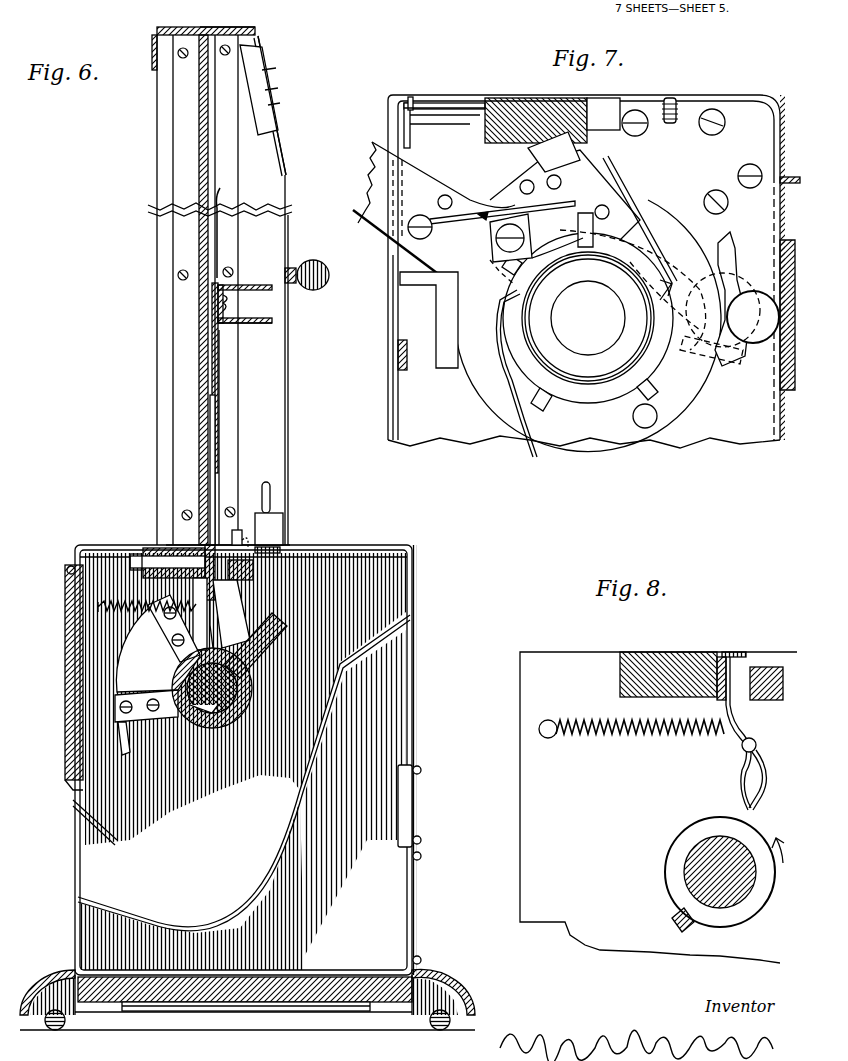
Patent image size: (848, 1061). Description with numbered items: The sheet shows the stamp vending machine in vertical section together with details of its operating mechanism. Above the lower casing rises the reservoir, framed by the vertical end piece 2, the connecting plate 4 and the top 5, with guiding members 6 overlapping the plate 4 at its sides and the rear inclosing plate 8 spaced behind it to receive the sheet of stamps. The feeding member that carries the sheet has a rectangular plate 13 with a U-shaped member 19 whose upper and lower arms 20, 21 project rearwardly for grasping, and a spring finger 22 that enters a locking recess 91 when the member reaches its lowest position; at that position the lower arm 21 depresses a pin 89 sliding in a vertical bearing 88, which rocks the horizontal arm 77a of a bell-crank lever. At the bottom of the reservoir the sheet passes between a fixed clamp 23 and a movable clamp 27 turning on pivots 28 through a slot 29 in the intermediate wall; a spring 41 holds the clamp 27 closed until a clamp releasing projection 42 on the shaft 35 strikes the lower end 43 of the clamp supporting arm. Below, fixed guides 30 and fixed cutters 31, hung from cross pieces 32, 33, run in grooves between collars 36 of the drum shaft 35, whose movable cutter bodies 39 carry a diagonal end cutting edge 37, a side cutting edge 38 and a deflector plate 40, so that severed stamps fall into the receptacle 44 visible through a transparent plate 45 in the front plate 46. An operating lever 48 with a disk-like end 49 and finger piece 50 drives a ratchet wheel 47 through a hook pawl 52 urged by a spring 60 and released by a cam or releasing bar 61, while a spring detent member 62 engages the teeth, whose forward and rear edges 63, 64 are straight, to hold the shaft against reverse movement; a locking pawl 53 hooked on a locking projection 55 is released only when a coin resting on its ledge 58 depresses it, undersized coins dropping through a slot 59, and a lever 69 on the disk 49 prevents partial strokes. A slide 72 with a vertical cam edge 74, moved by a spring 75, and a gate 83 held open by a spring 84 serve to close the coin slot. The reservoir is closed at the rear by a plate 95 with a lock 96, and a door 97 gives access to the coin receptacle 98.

In FIG. 6, the vertical end piece 2 is at (211, 210).
In FIG. 6, the connecting plate 4 is at (205, 160).
In FIG. 6, the top 5 is at (258, 30).
In FIG. 6, the guiding members 6 is at (173, 160).
In FIG. 6, the rear inclosing plate 8 is at (220, 475).
In FIG. 6, the plate 13 is at (218, 355).
In FIG. 6, the U-shaped member 19 is at (228, 302).
In FIG. 6, the upper arm 20 is at (288, 275).
In FIG. 6, the lower arm 21 is at (245, 333).
In FIG. 6, the spring finger 22 is at (218, 240).
In FIG. 6, the fixed clamp 23 is at (205, 545).
In FIG. 8, the fixed clamp 23 is at (722, 654).
In FIG. 6, the movable clamp 27 is at (237, 533).
In FIG. 8, the movable clamp 27 is at (738, 652).
In FIG. 8, the pivots 28 is at (757, 745).
In FIG. 7, the slot 29 is at (612, 130).
In FIG. 6, the fixed guides 30 is at (235, 605).
In FIG. 6, the fixed cutters 31 is at (165, 618).
In FIG. 6, the rear cross piece 32 is at (253, 572).
In FIG. 8, the rear cross piece 32 is at (768, 667).
In FIG. 6, the forward cross piece 33 is at (150, 548).
In FIG. 7, the forward cross piece 33 is at (530, 115).
In FIG. 8, the forward cross piece 33 is at (650, 660).
In FIG. 6, the drum shaft 35 is at (236, 696).
In FIG. 7, the drum shaft 35 is at (588, 318).
In FIG. 6, the collars 36 is at (252, 683).
In FIG. 6, the diagonal end cutting edge 37 is at (282, 622).
In FIG. 6, the side cutting edge 38 is at (150, 612).
In FIG. 6, the movable cutter bodies 39 is at (150, 606).
In FIG. 6, the deflector plate 40 is at (290, 599).
In FIG. 8, the spring 41 is at (630, 735).
In FIG. 8, the clamp releasing projection 42 is at (672, 918).
In FIG. 8, the lower end of clamp supporting arm 43 is at (750, 800).
In FIG. 6, the receptacle 44 is at (244, 773).
In FIG. 6, the transparent plate 45 is at (64, 725).
In FIG. 6, the front plate 46 is at (68, 567).
In FIG. 7, the ratchet wheel 47 is at (508, 278).
In FIG. 7, the operating lever 48 is at (524, 197).
In FIG. 7, the disk-like end 49 is at (592, 450).
In FIG. 7, the outer end 50 is at (430, 207).
In FIG. 7, the hook pawl 52 is at (583, 218).
In FIG. 7, the locking pawl 53 is at (738, 256).
In FIG. 7, the locking projection 55 is at (713, 195).
In FIG. 7, the ledge 58 is at (730, 364).
In FIG. 7, the slot 59 is at (778, 266).
In FIG. 7, the spring 60 is at (486, 212).
In FIG. 7, the cam or releasing bar 61 is at (497, 322).
In FIG. 7, the spring detent member 62 is at (645, 215).
In FIG. 7, the forward edge 63 is at (544, 408).
In FIG. 7, the rear edge 64 is at (640, 388).
In FIG. 7, the lever 69 is at (446, 368).
In FIG. 7, the slide 72 is at (440, 103).
In FIG. 7, the vertical cam edge 74 is at (393, 255).
In FIG. 7, the spring 75 is at (412, 98).
In FIG. 6, the horizontal arm 77a is at (280, 551).
In FIG. 7, the gate 83 is at (470, 103).
In FIG. 7, the spring 84 is at (670, 124).
In FIG. 6, the vertical bearing 88 is at (283, 525).
In FIG. 6, the pin 89 is at (272, 495).
In FIG. 6, the locking recess 91 is at (213, 413).
In FIG. 6, the plate 95 is at (285, 170).
In FIG. 6, the lock 96 is at (272, 100).
In FIG. 6, the door 97 is at (420, 885).
In FIG. 6, the coin receptacle 98 is at (243, 760).